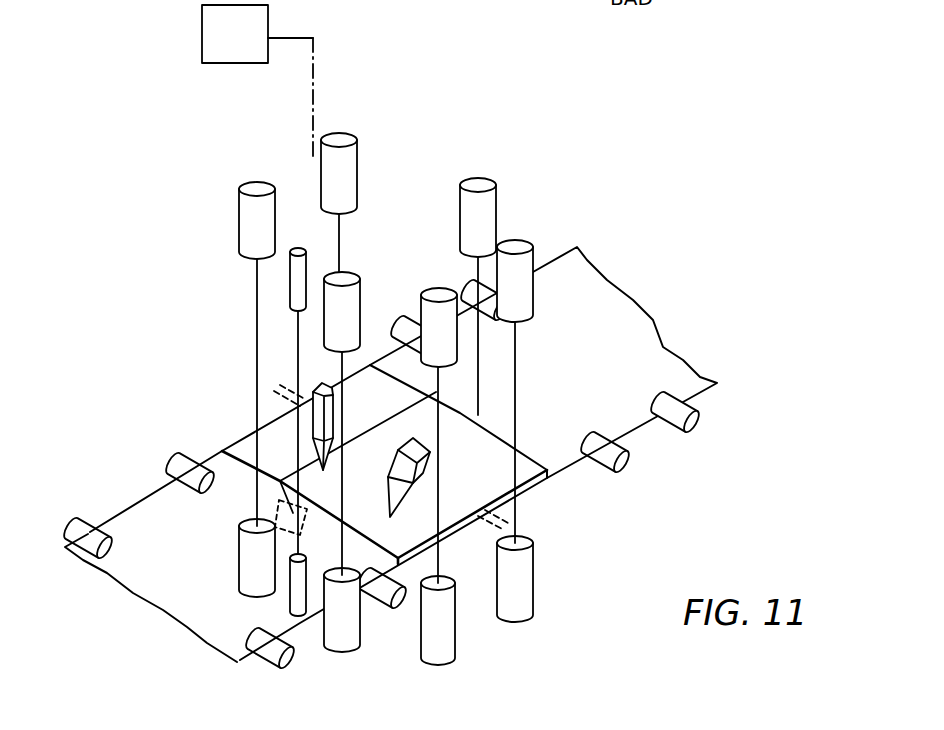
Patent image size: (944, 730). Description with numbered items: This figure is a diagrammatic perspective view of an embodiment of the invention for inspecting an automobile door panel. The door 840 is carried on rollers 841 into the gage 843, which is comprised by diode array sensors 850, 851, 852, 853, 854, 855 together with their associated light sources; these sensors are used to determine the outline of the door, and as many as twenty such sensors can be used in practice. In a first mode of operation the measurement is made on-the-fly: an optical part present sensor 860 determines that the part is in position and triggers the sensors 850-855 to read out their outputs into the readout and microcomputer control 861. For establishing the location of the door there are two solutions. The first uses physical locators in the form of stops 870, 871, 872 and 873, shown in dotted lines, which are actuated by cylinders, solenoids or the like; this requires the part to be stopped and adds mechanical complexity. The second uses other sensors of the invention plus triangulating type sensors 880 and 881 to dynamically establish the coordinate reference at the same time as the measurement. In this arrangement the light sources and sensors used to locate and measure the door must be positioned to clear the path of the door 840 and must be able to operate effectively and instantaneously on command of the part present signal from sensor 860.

The door 840 is at (545, 480).
The rollers 841 is at (690, 420).
The gage 843 is at (603, 172).
The diode array sensor 850 is at (250, 187).
The diode array sensor 851 is at (340, 137).
The diode array sensor 852 is at (348, 275).
The diode array sensor 853 is at (487, 182).
The diode array sensor 854 is at (438, 292).
The diode array sensor 855 is at (532, 248).
The optical part present sensor 860 is at (292, 254).
The readout and microcomputer control 861 is at (251, 45).
The stop 870 is at (275, 402).
The stop 871 is at (280, 508).
The stop 872 is at (495, 531).
The stop 873 is at (313, 537).
The triangulating sensor 880 is at (320, 385).
The triangulating sensor 881 is at (427, 471).